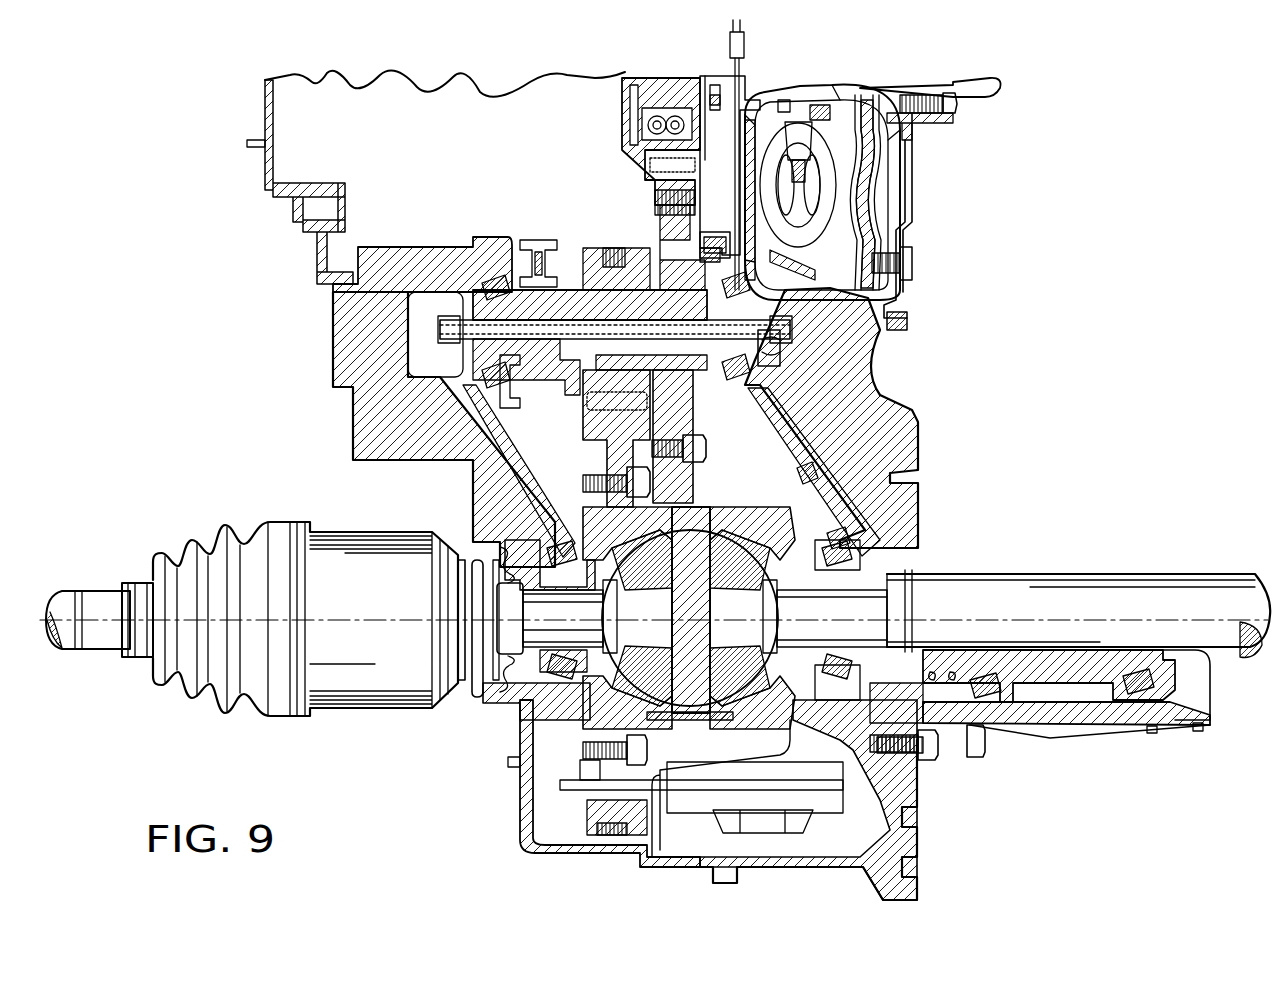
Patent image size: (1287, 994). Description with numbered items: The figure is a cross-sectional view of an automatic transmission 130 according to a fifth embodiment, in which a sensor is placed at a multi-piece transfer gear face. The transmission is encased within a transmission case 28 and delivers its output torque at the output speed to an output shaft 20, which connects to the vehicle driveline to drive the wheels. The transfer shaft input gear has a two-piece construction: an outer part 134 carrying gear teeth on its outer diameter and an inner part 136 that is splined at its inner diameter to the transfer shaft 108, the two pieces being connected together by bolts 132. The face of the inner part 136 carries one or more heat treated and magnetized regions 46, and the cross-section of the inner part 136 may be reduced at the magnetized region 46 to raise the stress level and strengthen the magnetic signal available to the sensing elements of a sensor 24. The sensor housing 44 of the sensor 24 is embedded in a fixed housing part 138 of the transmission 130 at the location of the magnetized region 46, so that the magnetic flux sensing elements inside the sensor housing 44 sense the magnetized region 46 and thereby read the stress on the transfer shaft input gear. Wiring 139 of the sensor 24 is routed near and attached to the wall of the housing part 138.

The output shaft 20 is at (1080, 576).
The sensor 24 is at (620, 190).
The transmission case 28 is at (746, 120).
The sensor housing 44 is at (719, 247).
The magnetized region 46 is at (657, 250).
The transfer shaft 108 is at (608, 280).
The automatic transmission 130 is at (1095, 284).
The bolts 132 is at (706, 448).
The outer part 134 is at (647, 180).
The inner part 136 is at (770, 350).
The fixed housing part 138 is at (863, 420).
The wiring 139 is at (733, 66).